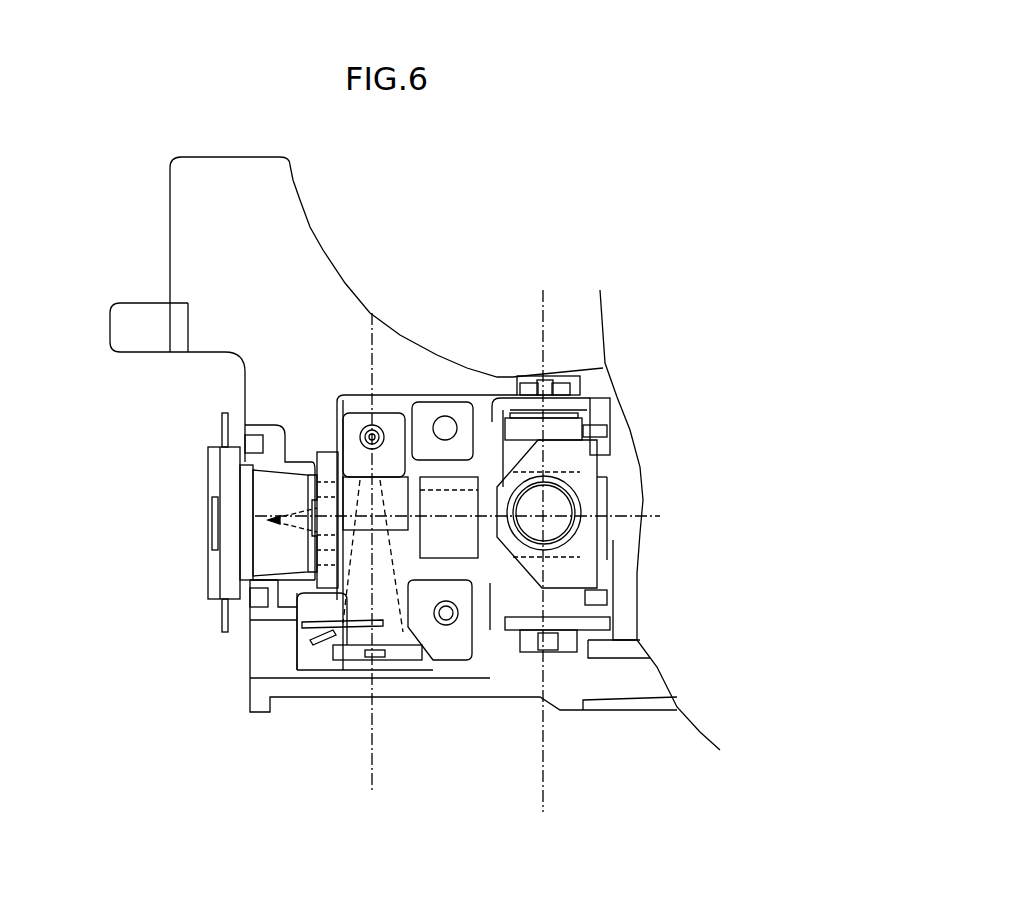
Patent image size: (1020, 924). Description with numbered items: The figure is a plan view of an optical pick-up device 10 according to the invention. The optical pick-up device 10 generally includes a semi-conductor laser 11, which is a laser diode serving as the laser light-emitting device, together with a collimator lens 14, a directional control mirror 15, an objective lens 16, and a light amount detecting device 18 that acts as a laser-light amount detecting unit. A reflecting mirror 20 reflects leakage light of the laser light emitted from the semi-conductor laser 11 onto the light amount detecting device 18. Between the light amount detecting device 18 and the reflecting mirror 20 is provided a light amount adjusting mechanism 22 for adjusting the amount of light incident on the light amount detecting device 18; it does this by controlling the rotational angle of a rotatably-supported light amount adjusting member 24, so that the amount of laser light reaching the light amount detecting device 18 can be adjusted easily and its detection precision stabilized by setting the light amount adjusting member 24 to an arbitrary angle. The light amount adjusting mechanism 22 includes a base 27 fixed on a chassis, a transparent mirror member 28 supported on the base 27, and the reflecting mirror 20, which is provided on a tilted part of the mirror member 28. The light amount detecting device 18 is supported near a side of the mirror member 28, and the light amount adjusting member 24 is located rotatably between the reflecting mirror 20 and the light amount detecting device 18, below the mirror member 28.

The optical pick-up device 10 is at (492, 198).
The semi-conductor laser 11 is at (225, 580).
The collimator lens 14 is at (455, 505).
The directional control mirror 15 is at (600, 545).
The objective lens 16 is at (558, 502).
The light amount detecting device 18 is at (345, 665).
The reflecting mirror 20 is at (408, 414).
The light amount adjusting mechanism 22 is at (266, 658).
The light amount adjusting member 24 is at (293, 690).
The base 27 is at (490, 690).
The mirror member 28 is at (450, 662).